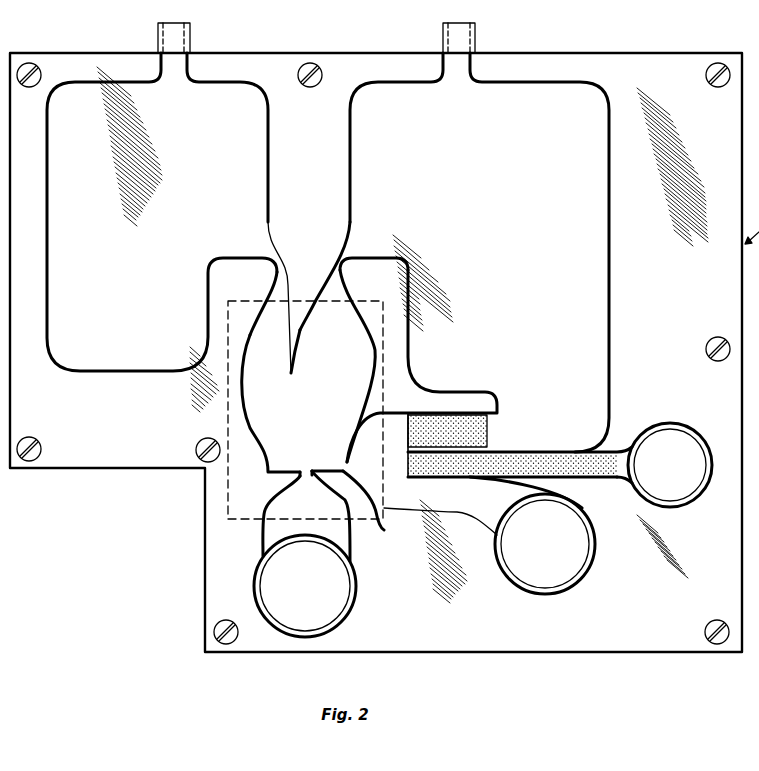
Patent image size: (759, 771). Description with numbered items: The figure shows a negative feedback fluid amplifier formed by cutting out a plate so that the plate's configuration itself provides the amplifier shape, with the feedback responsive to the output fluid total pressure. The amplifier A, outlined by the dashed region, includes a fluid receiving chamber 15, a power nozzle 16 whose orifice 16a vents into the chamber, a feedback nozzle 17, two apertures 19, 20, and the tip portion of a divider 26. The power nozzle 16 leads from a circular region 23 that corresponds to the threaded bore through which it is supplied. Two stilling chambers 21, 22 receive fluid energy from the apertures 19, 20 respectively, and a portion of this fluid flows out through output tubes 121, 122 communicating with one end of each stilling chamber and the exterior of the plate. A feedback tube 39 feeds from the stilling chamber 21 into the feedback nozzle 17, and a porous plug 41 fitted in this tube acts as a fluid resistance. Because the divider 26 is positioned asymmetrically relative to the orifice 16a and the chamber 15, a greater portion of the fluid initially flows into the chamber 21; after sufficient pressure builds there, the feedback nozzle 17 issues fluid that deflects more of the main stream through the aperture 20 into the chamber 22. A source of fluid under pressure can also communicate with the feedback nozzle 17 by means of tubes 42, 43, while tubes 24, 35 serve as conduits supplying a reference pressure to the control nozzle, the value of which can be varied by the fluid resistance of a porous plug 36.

The output tube 121 is at (470, 68).
The output tube 122 is at (184, 62).
The stilling chamber 22 is at (108, 279).
The stilling chamber 21 is at (503, 282).
The fluid receiving chamber 15 is at (293, 412).
The aperture 20 is at (281, 297).
The aperture 19 is at (329, 305).
The divider 26 is at (294, 328).
The orifice 16a is at (308, 472).
The power nozzle 16 is at (333, 484).
The feedback nozzle 17 is at (384, 530).
The threaded bore region of power nozzle 23 is at (340, 596).
The feedback tube 39 is at (455, 418).
The porous plug 41 is at (482, 432).
The tube 35 is at (582, 468).
The porous plug 36 is at (594, 460).
The tube 24 is at (688, 488).
The tube 42 is at (458, 512).
The tube 43 is at (526, 578).
The amplifier A is at (228, 413).